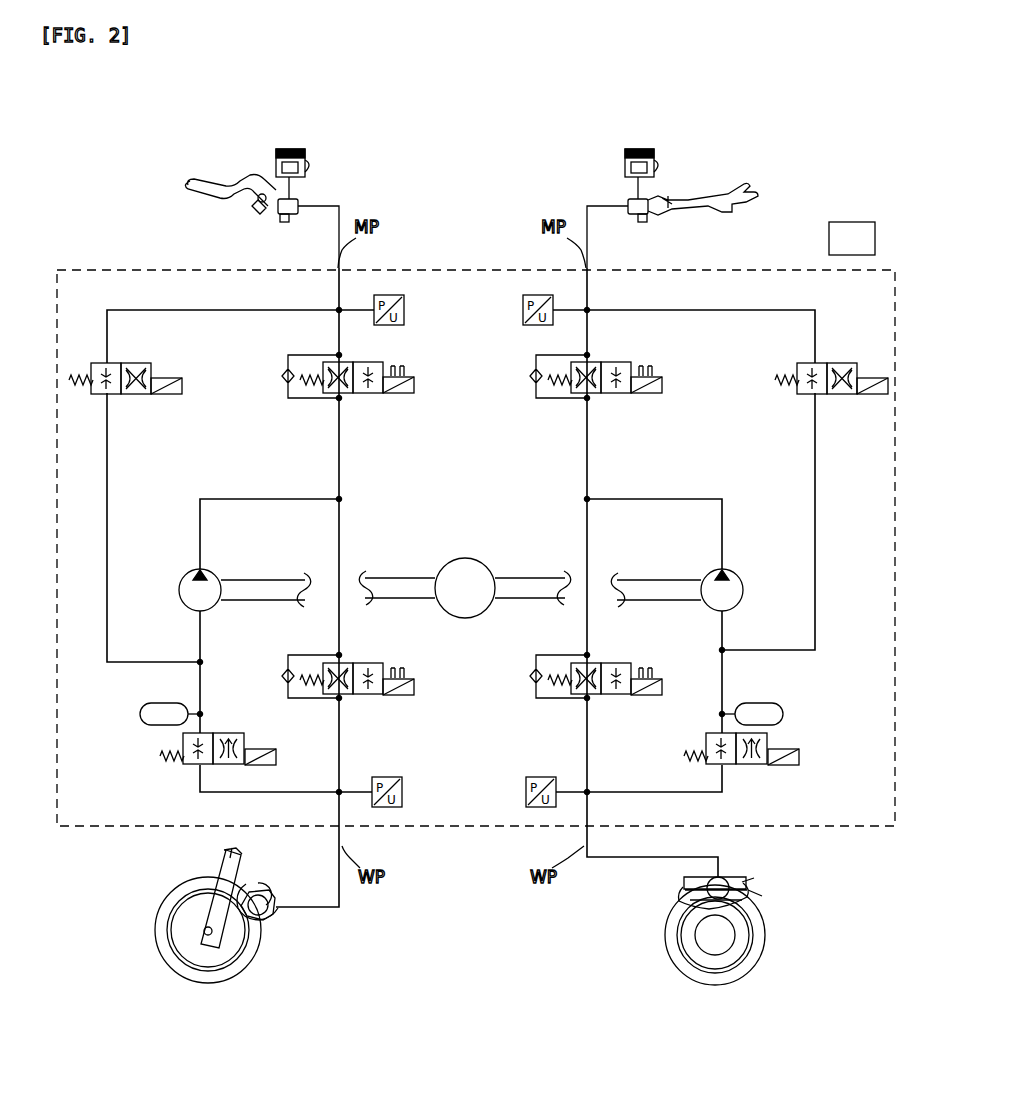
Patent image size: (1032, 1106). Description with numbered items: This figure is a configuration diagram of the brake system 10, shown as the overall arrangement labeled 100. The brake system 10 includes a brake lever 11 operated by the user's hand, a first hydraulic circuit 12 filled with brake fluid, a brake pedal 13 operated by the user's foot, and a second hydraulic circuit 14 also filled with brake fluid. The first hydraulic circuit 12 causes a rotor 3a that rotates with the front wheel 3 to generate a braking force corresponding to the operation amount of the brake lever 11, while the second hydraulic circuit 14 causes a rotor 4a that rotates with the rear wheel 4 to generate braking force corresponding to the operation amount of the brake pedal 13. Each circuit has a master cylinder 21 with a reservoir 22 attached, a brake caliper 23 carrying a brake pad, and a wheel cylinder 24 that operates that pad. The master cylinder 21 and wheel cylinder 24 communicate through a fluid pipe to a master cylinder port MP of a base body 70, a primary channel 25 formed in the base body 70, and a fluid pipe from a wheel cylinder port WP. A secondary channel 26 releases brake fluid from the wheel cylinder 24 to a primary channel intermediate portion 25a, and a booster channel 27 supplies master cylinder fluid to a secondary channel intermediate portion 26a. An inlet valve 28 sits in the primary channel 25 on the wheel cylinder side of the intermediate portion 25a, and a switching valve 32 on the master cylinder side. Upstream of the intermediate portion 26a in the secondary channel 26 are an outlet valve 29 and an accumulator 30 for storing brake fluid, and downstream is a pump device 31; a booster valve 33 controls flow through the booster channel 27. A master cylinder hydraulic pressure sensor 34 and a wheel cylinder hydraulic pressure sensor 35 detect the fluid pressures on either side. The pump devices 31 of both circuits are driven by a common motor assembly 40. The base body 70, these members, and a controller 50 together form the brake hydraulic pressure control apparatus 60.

The brake system 100 is at (861, 94).
The brake system 10 is at (117, 178).
The brake lever 11 is at (202, 182).
The first hydraulic circuit 12 is at (378, 136).
The brake pedal 13 is at (738, 190).
The second hydraulic circuit 14 is at (540, 136).
The master cylinder 21 is at (290, 217).
The reservoir 22 is at (290, 149).
The brake caliper 23 is at (262, 887).
The wheel cylinder 24 is at (272, 900).
The primary channel 25 is at (339, 460).
The primary channel intermediate portion 25a is at (344, 500).
The secondary channel 26 is at (232, 497).
The secondary channel intermediate portion 26a is at (196, 660).
The booster channel 27 is at (206, 314).
The inlet valve 28 is at (374, 694).
The outlet valve 29 is at (234, 734).
The accumulator 30 is at (160, 704).
The pump device 31 is at (218, 608).
The switching valve 32 is at (394, 394).
The booster valve 33 is at (160, 394).
The master cylinder hydraulic pressure sensor 34 is at (405, 308).
The wheel cylinder hydraulic pressure sensor 35 is at (402, 791).
The motor assembly 40 is at (476, 620).
The controller (ECU) 50 is at (862, 222).
The brake hydraulic pressure control apparatus 60 is at (814, 210).
The base body 70 is at (100, 268).
The front wheel 3 is at (225, 927).
The rotor 3a is at (170, 959).
The rear wheel 4 is at (704, 949).
The rotor 4a is at (748, 968).